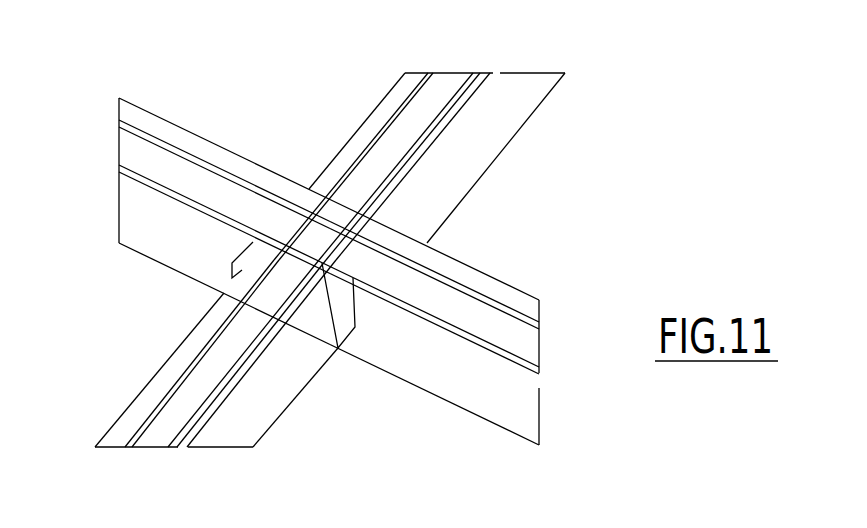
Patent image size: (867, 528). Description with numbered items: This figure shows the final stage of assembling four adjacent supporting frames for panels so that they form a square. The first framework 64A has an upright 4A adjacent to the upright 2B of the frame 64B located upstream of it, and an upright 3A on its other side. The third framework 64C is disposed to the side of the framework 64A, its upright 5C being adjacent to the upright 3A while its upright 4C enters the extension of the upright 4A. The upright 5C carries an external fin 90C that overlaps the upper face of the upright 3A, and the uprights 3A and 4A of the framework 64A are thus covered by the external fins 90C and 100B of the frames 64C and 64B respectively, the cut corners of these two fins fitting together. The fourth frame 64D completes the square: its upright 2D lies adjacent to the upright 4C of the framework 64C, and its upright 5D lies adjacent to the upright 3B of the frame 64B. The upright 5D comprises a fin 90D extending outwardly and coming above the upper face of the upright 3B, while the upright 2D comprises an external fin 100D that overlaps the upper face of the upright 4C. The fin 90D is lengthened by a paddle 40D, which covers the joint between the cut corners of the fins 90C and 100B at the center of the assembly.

The upright 2D is at (173, 124).
The upright 2B is at (528, 315).
The upright 3B is at (525, 100).
The upright 3A is at (270, 408).
The upright 4C is at (153, 215).
The upright 4A is at (475, 382).
The upright 5D is at (375, 108).
The upright 5C is at (142, 405).
The fin 90D is at (445, 92).
The external fin 90C is at (167, 425).
The external fin 100D is at (240, 203).
The fin 100B is at (480, 318).
The paddle 40D is at (327, 245).
The first framework 64A is at (397, 435).
The frame 64B is at (591, 213).
The third framework 64C is at (124, 317).
The fourth frame 64D is at (303, 118).